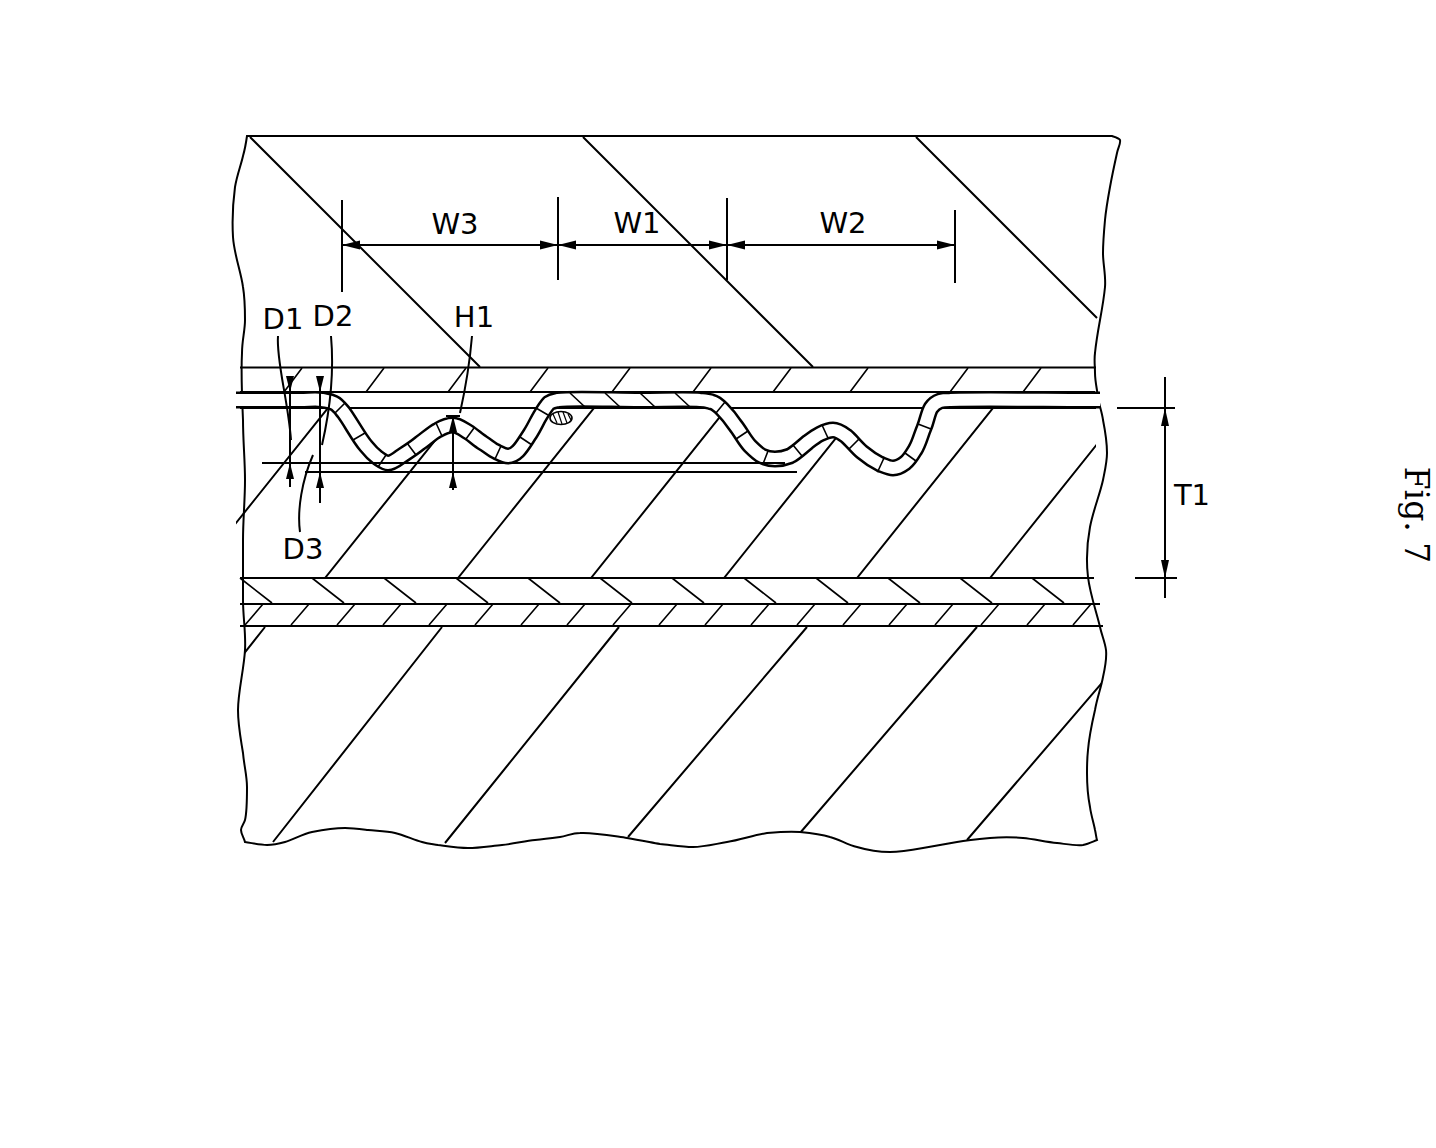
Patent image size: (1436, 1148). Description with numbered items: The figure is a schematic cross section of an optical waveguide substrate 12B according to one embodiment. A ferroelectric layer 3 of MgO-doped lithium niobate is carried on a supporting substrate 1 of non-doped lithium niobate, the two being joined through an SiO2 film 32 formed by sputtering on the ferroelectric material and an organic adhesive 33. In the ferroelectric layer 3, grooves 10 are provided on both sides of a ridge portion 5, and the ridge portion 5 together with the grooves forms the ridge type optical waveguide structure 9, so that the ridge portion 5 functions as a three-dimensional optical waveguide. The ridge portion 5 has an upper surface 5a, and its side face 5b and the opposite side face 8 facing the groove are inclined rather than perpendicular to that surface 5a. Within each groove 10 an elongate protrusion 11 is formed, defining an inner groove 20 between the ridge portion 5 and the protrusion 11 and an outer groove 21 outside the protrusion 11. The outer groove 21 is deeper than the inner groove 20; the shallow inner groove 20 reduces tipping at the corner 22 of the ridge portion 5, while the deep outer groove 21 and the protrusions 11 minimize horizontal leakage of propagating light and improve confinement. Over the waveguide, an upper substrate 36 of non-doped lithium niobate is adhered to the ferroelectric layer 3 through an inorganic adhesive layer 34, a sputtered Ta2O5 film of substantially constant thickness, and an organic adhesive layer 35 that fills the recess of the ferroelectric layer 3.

The supporting substrate 1 is at (1077, 742).
The ferroelectric layer 3 is at (1162, 345).
The ridge portion 5 is at (684, 374).
The surface 5a is at (620, 393).
The side face 5b is at (750, 396).
The side face 8 is at (930, 388).
The ridge type optical waveguide structure 9 is at (368, 512).
The groove 10 is at (863, 370).
The protrusion 11 is at (837, 448).
The optical waveguide substrate 12B is at (1155, 203).
The inner groove 20 is at (511, 408).
The outer groove 21 is at (398, 416).
The corner 22 is at (565, 411).
The SiO2 film 32 is at (1093, 582).
The organic adhesive 33 is at (1090, 613).
The inorganic adhesive layer 34 is at (1090, 400).
The organic adhesive layer 35 is at (1090, 378).
The upper substrate 36 is at (1093, 252).